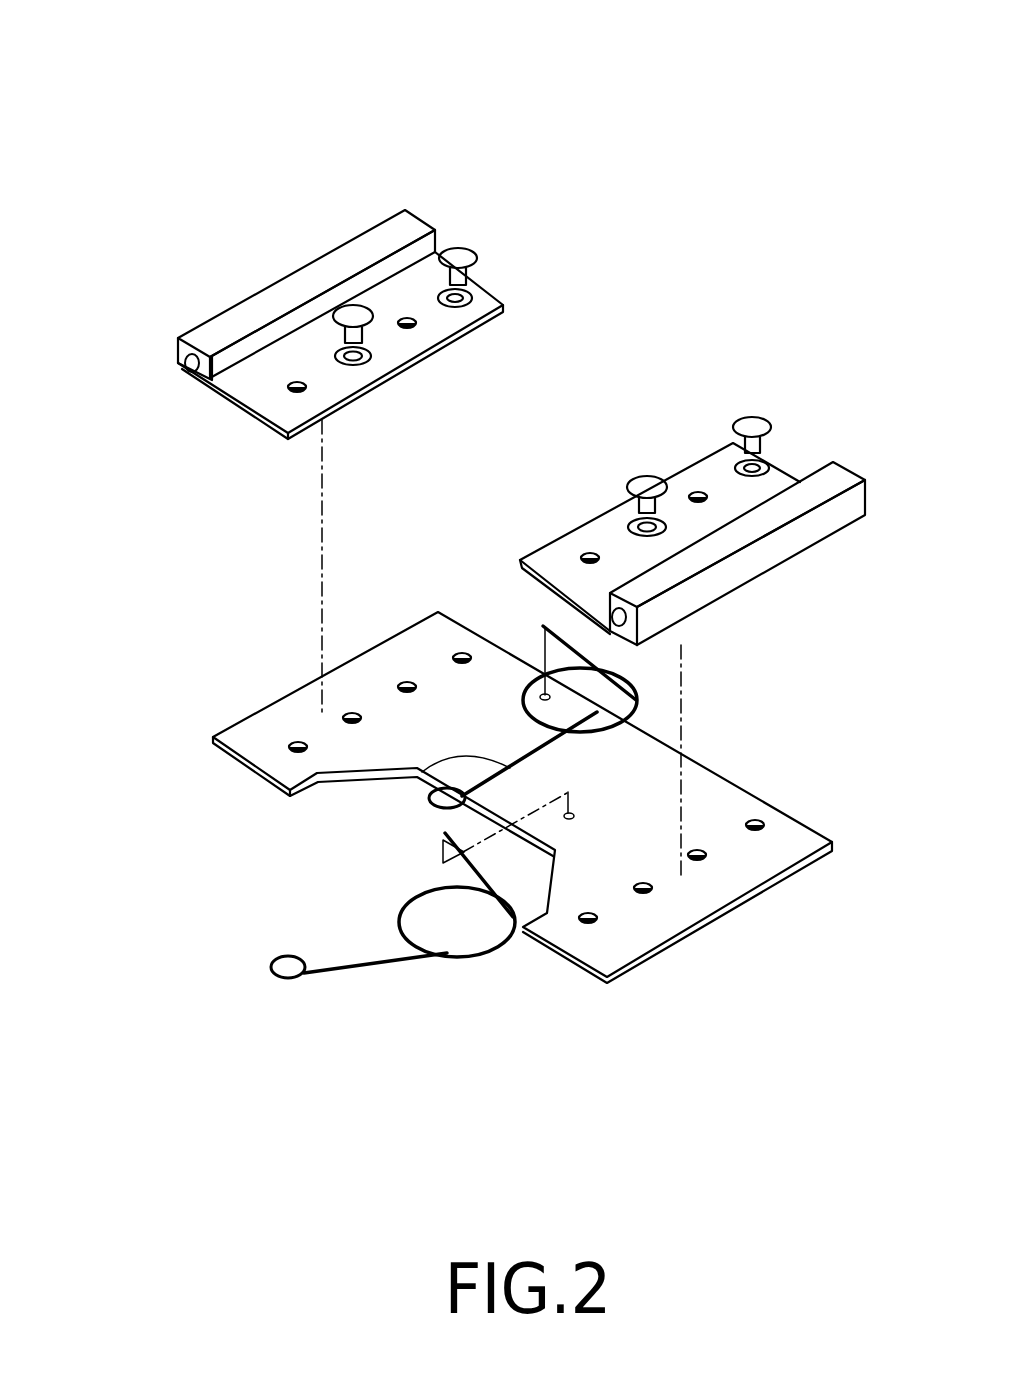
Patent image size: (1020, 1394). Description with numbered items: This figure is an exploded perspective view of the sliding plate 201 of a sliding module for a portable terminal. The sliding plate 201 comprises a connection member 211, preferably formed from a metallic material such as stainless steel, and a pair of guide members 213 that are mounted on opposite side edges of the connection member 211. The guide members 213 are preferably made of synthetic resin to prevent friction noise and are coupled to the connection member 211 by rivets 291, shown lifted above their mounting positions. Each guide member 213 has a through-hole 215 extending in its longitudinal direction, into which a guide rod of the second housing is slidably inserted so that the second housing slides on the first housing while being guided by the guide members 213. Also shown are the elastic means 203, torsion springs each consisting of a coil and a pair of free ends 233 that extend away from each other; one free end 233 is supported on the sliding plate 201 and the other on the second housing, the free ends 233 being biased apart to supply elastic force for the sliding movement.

The sliding plate 201 is at (389, 24).
The elastic means 203 is at (636, 711).
The connection member 211 is at (717, 929).
The guide member 213 is at (235, 295).
The through-hole 215 is at (185, 365).
The free end 233 is at (541, 623).
The rivet 291 is at (351, 315).